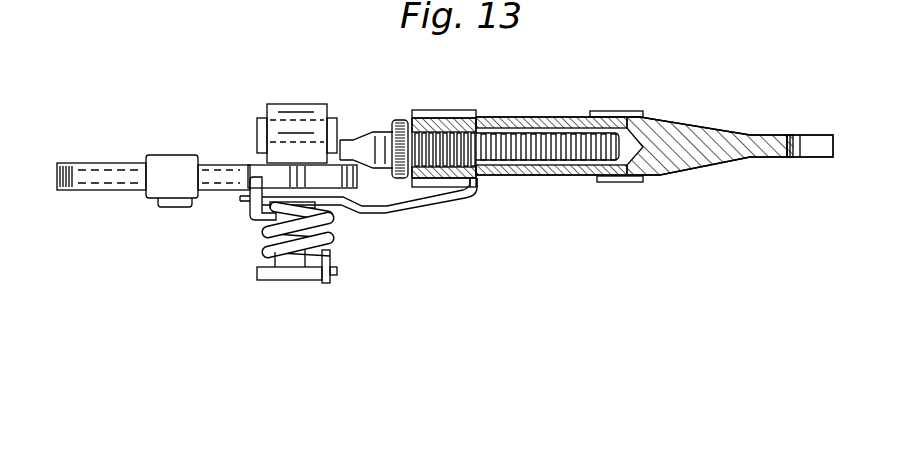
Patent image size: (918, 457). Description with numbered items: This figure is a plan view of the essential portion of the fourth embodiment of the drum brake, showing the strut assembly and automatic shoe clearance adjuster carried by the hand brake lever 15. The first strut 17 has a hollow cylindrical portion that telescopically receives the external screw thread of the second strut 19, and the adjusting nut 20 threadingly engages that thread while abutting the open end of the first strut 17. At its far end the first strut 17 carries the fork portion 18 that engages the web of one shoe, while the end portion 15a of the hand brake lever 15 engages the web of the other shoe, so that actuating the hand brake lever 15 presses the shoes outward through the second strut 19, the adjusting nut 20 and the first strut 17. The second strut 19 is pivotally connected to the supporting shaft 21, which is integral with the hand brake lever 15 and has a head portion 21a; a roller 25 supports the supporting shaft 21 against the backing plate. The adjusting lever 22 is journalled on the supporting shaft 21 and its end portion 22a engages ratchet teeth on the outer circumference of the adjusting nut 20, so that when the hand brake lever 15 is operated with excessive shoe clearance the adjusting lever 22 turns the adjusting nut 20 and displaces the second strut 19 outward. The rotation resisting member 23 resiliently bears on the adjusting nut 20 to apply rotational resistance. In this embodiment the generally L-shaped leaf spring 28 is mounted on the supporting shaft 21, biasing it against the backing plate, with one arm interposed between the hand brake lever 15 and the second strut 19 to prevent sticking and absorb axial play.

The hand brake lever 15 is at (119, 177).
The end portion of the hand brake lever 15a is at (340, 165).
The first strut 17 is at (708, 125).
The fork portion 18 is at (813, 143).
The second strut 19 is at (392, 125).
The adjusting nut 20 is at (450, 112).
The supporting shaft 21 is at (273, 260).
The head portion of the supporting shaft 21a is at (277, 280).
The adjusting lever 22 is at (427, 212).
The end portion of the adjusting lever 22a is at (477, 190).
The rotation resisting member 23 is at (622, 187).
The roller 25 is at (260, 117).
The L-shaped leaf spring 28 is at (304, 100).